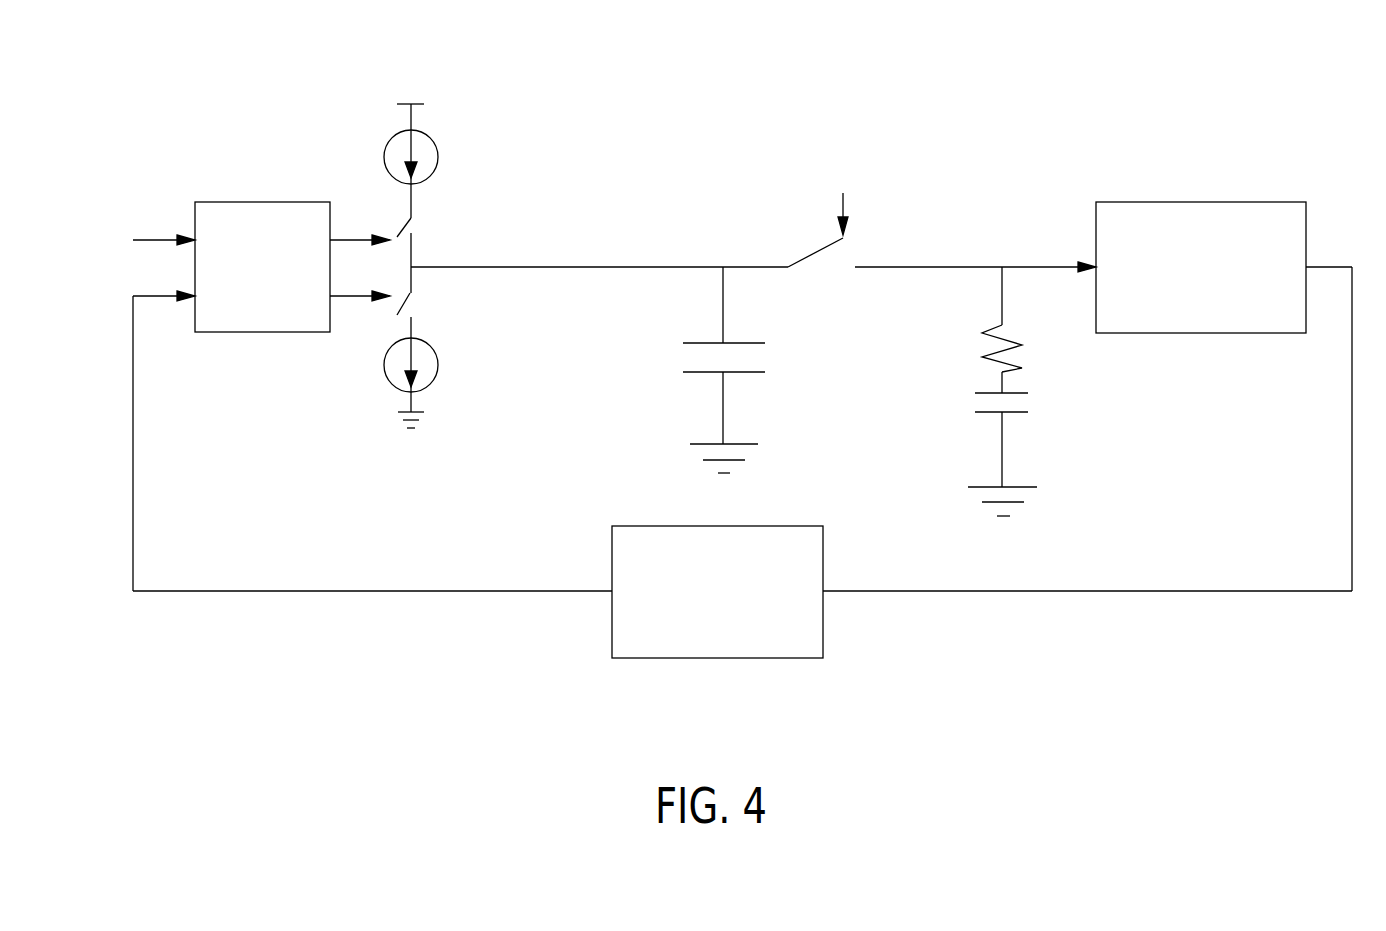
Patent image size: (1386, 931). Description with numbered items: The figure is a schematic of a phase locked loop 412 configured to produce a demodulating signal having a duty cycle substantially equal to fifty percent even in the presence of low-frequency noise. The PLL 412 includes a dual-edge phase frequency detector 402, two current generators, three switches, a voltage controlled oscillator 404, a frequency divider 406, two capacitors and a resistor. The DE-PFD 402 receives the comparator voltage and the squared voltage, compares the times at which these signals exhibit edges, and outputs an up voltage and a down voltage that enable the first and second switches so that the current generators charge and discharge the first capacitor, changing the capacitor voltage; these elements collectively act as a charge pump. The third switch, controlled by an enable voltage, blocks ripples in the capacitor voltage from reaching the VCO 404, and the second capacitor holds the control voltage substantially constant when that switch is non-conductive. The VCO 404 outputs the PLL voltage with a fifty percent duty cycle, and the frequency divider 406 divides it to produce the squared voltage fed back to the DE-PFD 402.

The phase locked loop 412 is at (78, 72).
The dual-edge phase frequency detector 402 is at (262, 267).
The voltage controlled oscillator 404 is at (1201, 267).
The frequency divider 406 is at (717, 592).